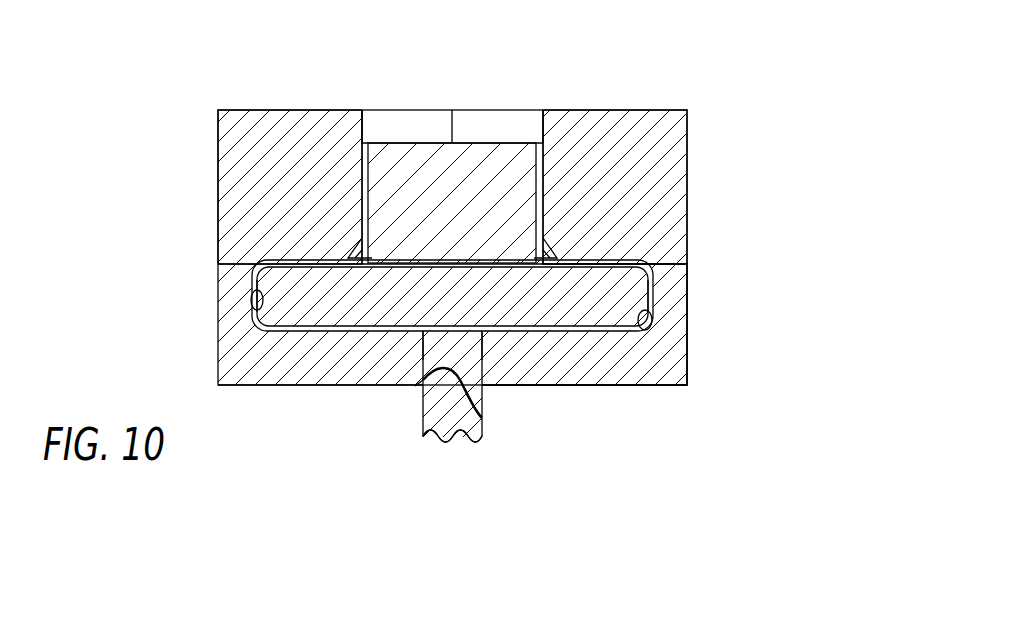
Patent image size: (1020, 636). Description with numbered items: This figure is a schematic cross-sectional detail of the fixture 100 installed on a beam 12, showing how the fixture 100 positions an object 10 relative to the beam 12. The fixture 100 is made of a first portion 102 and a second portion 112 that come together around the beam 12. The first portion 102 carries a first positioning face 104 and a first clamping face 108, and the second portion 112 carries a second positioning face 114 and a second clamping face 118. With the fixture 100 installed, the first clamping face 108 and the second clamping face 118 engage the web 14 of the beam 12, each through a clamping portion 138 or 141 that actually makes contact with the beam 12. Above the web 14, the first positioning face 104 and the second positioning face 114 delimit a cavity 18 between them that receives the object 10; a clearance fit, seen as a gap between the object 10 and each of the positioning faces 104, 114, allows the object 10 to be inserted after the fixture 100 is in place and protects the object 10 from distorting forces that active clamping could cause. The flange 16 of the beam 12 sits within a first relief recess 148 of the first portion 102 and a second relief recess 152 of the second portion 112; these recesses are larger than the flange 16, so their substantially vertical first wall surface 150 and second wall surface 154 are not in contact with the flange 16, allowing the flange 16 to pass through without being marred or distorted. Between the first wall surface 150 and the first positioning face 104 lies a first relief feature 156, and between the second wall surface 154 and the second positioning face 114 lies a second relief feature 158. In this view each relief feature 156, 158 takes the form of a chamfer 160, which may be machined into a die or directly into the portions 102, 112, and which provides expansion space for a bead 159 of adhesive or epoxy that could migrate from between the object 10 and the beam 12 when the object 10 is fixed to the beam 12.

The fixture 100 is at (634, 80).
The first positioning face 104 is at (370, 130).
The second positioning face 114 is at (538, 130).
The cavity 18 is at (478, 122).
The object 10 is at (476, 173).
The first relief feature 156 is at (377, 207).
The second relief feature 158 is at (528, 231).
The chamfer 160 is at (363, 256).
The bead 159 is at (372, 265).
The first portion 102 is at (313, 418).
The second portion 112 is at (560, 412).
The first wall surface 150 is at (258, 283).
The second wall surface 154 is at (648, 292).
The flange 16 is at (498, 306).
The first relief recess 148 is at (257, 320).
The second relief recess 152 is at (655, 333).
The beam 12 is at (413, 408).
The clamping portion 138 is at (482, 418).
The clamping portion 141 is at (415, 386).
The web 14 is at (482, 437).
The first clamping face 108 is at (433, 352).
The second clamping face 118 is at (475, 352).